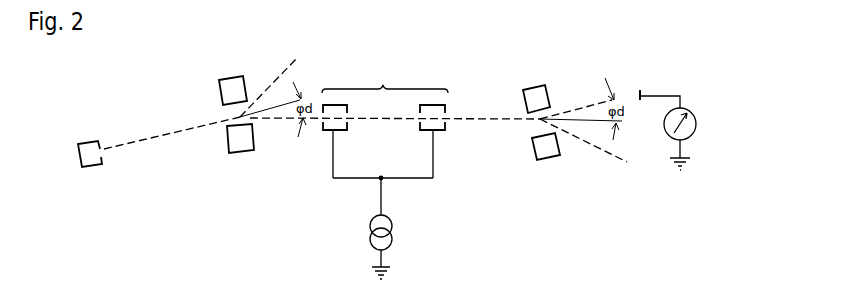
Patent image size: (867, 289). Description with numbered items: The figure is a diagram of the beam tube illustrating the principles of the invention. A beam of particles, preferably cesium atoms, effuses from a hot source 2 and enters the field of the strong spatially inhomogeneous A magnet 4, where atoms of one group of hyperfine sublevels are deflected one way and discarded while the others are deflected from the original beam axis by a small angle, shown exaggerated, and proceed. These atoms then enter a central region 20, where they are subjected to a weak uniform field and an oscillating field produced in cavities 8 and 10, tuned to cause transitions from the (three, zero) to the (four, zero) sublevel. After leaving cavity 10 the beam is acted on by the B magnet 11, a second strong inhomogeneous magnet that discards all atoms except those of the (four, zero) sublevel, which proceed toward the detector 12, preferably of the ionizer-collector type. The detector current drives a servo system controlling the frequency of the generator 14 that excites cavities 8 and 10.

The hot source 2 is at (94, 162).
The A magnet 4 is at (227, 146).
The cavity 8 is at (325, 132).
The cavity 10 is at (447, 128).
The B magnet 11 is at (533, 155).
The detector 12 is at (641, 89).
The generator 14 is at (392, 232).
The central region 20 is at (385, 79).